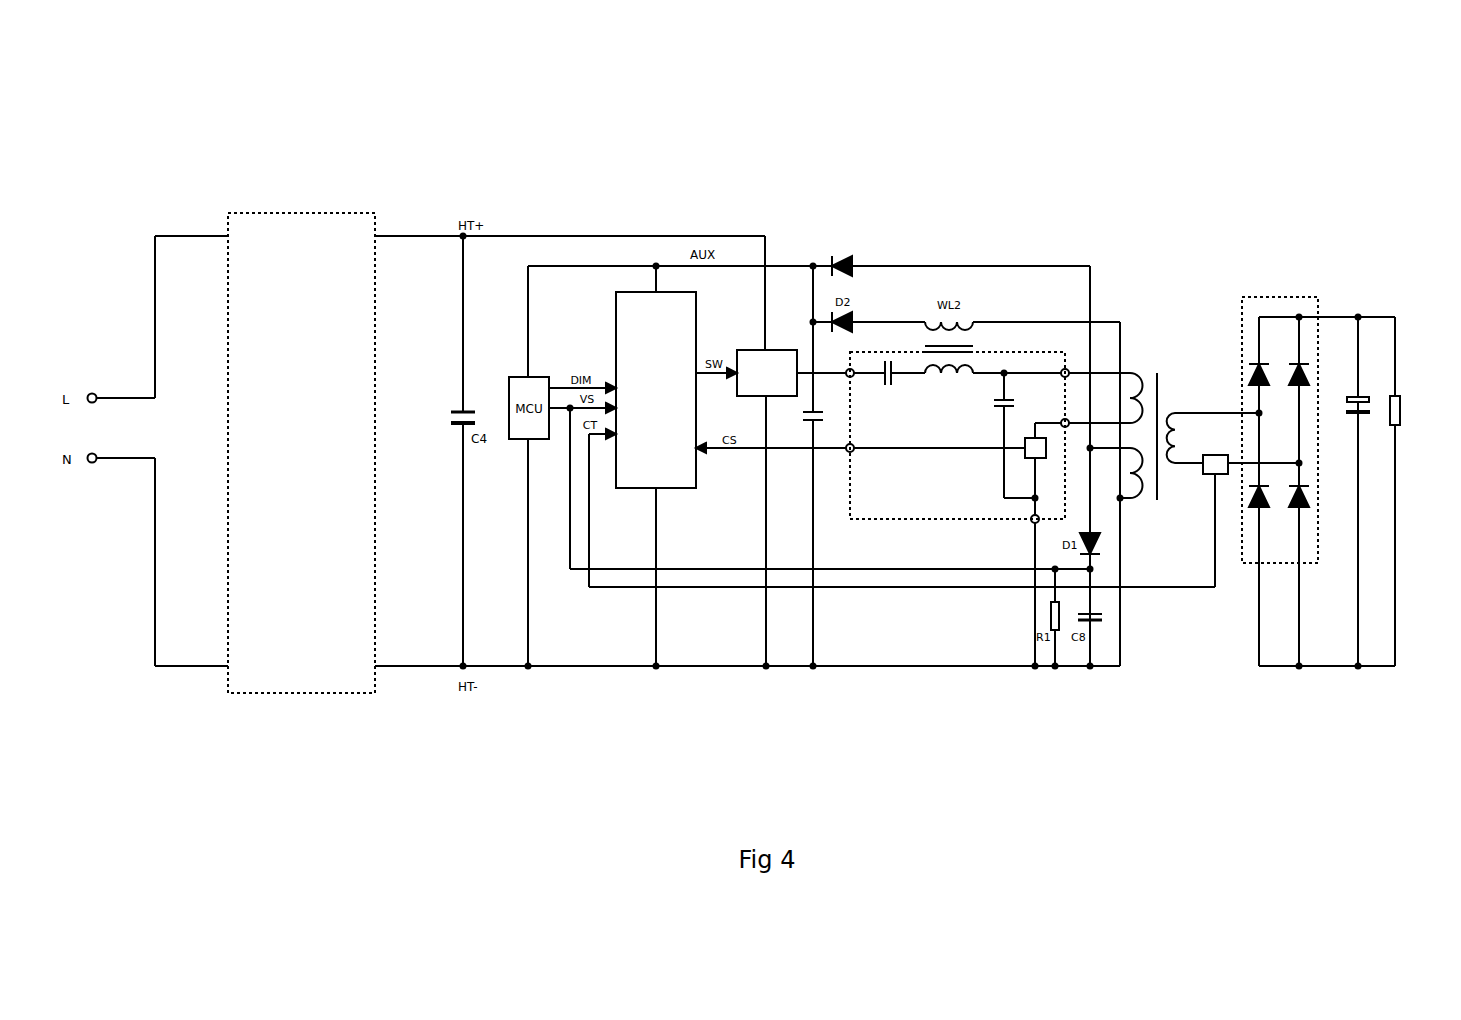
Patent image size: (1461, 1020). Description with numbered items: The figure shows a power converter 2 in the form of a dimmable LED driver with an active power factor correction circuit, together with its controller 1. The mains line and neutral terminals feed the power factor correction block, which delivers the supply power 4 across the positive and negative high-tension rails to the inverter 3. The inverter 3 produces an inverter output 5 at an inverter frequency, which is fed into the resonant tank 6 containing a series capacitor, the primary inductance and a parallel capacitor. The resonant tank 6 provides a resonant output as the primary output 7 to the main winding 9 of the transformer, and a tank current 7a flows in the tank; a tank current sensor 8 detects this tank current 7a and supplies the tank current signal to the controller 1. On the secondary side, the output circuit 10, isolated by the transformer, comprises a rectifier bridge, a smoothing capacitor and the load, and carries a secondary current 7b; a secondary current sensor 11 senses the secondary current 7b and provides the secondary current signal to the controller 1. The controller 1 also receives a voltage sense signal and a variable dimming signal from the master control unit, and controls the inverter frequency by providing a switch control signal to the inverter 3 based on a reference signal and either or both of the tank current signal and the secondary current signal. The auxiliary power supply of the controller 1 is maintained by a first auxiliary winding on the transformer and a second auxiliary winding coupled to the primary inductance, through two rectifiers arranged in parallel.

The controller 1 is at (656, 390).
The power converter 2 is at (1210, 126).
The inverter 3 is at (758, 352).
The supply power 4 is at (533, 176).
The inverter output 5 is at (802, 370).
The resonant tank 6 is at (876, 519).
The primary output 7 is at (1102, 366).
The tank current 7a is at (1103, 411).
The secondary current 7b is at (1213, 403).
The tank current sensor 8 is at (1025, 440).
The main winding 9 is at (1165, 376).
The output circuit 10 is at (1219, 734).
The secondary current sensor 11 is at (1207, 478).